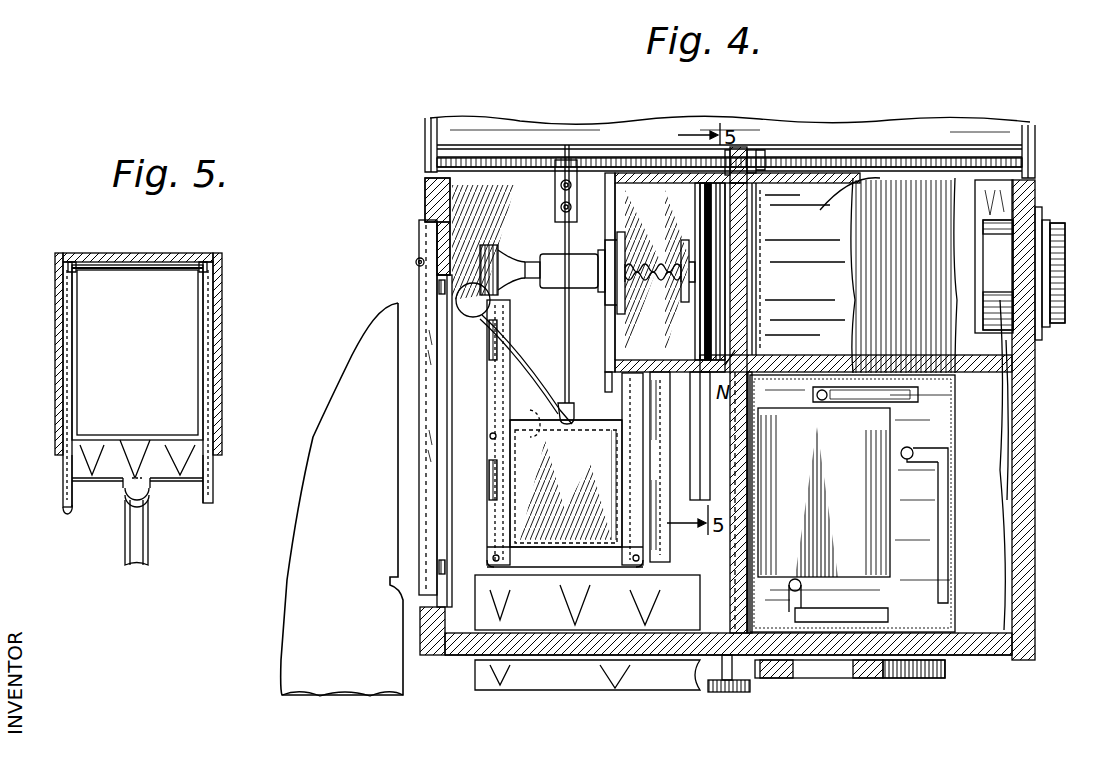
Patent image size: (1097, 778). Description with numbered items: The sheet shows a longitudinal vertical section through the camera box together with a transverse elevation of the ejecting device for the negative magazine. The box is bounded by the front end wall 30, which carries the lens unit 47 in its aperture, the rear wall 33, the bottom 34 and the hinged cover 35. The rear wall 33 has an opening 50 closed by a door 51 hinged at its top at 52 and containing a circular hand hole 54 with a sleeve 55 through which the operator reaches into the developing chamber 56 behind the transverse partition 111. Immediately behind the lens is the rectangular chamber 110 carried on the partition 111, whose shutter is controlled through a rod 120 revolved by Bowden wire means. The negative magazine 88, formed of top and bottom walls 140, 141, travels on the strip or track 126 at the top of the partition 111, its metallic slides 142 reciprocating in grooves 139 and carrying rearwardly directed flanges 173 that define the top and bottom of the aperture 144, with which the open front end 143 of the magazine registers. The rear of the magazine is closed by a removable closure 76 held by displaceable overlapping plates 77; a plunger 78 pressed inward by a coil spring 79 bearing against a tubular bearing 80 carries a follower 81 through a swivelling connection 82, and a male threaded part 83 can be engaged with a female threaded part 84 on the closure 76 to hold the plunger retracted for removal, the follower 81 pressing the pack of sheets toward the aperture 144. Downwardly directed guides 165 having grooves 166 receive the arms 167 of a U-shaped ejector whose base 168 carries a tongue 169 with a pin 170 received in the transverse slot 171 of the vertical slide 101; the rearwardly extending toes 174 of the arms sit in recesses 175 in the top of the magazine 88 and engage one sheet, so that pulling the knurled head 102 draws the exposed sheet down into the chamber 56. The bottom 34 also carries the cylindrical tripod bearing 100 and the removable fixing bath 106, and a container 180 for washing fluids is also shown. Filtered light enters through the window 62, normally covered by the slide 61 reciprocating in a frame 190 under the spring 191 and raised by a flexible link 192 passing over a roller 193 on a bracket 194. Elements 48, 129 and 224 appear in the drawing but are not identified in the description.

In FIG. 4, the front end wall 30 is at (1025, 418).
In FIG. 4, the rear wall 33 is at (445, 209).
In FIG. 4, the bottom 34 is at (1003, 660).
In FIG. 4, the hinged cover 35 is at (558, 128).
In FIG. 4, the lens unit 47 is at (1057, 220).
In FIG. 4, the shaft 48 is at (1047, 328).
In FIG. 4, the opening 50 is at (440, 238).
In FIG. 4, the door 51 is at (437, 289).
In FIG. 4, the hinge 52 is at (416, 262).
In FIG. 4, the hand hole 54 is at (430, 563).
In FIG. 4, the sleeve 55 is at (328, 427).
In FIG. 4, the developing chamber 56 is at (478, 205).
In FIG. 4, the shutter slide 61 is at (580, 440).
In FIG. 4, the window 62 is at (540, 430).
In FIG. 4, the closure 76 is at (612, 212).
In FIG. 4, the overlapping plates 77 is at (725, 298).
In FIG. 4, the plunger 78 is at (520, 265).
In FIG. 4, the spring 79 is at (664, 283).
In FIG. 4, the tubular bearing 80 is at (578, 282).
In FIG. 4, the follower 81 is at (700, 218).
In FIG. 4, the swivelling connection 82 is at (683, 252).
In FIG. 4, the male threaded part 83 is at (682, 290).
In FIG. 4, the female threaded part 84 is at (622, 265).
In FIG. 4, the magazine 88 is at (620, 232).
In FIG. 4, the cylindrical bearing 100 is at (935, 678).
In FIG. 4, the slide 101 is at (735, 678).
In FIG. 5, the slide 101 is at (140, 548).
In FIG. 4, the knob 102 is at (706, 685).
In FIG. 4, the fixing bath 106 is at (490, 680).
In FIG. 4, the chamber 110 is at (905, 175).
In FIG. 4, the transverse wall 111 is at (735, 547).
In FIG. 4, the rod 120 is at (845, 200).
In FIG. 4, the strip 126 is at (740, 158).
In FIG. 4, the bracket 129 is at (770, 160).
In FIG. 4, the grooves 139 is at (746, 190).
In FIG. 4, the top wall 140 is at (645, 160).
In FIG. 4, the bottom wall 141 is at (620, 366).
In FIG. 4, the metallic slides 142 is at (748, 215).
In FIG. 4, the open front end 143 is at (745, 250).
In FIG. 4, the aperture 144 is at (745, 278).
In FIG. 4, the guides 165 is at (712, 485).
In FIG. 5, the guides 165 is at (62, 356).
In FIG. 5, the grooves 166 is at (70, 502).
In FIG. 5, the arms 167 is at (200, 376).
In FIG. 5, the base 168 is at (90, 466).
In FIG. 5, the tongue 169 is at (130, 484).
In FIG. 5, the pin 170 is at (142, 492).
In FIG. 5, the slot 171 is at (130, 490).
In FIG. 4, the flanges 173 is at (736, 345).
In FIG. 5, the toes 174 is at (200, 278).
In FIG. 5, the recesses 175 is at (185, 272).
In FIG. 4, the container 180 is at (640, 590).
In FIG. 4, the frame 190 is at (497, 385).
In FIG. 4, the spring 191 is at (487, 338).
In FIG. 4, the flexible link 192 is at (563, 310).
In FIG. 4, the roller 193 is at (560, 188).
In FIG. 4, the bracket 194 is at (557, 208).
In FIG. 4, the block 224 is at (788, 668).